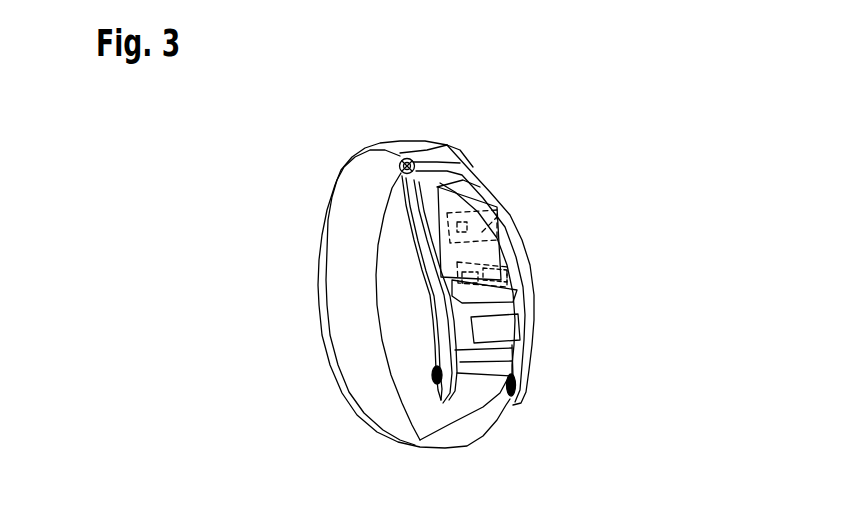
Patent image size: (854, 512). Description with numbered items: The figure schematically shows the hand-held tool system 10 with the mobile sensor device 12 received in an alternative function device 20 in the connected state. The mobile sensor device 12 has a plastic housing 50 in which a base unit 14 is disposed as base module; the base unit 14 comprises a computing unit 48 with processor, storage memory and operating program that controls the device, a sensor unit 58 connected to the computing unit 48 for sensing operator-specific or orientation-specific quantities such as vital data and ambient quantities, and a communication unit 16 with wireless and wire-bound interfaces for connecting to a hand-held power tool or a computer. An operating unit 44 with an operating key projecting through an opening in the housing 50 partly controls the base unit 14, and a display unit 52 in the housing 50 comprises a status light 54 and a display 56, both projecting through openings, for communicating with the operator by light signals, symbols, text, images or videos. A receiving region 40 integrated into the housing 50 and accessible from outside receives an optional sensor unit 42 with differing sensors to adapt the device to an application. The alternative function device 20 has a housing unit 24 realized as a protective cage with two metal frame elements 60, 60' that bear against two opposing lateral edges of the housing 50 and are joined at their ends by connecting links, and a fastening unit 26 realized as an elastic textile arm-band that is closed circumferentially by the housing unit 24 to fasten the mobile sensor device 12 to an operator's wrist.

The hand-held tool system 10 is at (468, 257).
The mobile sensor device 12 is at (509, 287).
The base unit 14 is at (516, 280).
The communication unit 16 is at (526, 323).
The alternative function device 20 is at (290, 297).
The housing unit 24 is at (335, 306).
The fastening unit 26 is at (403, 410).
The receiving region 40 is at (507, 233).
The optional sensor unit 42 is at (373, 226).
The operating unit 44 is at (534, 332).
The computing unit 48 is at (391, 320).
The housing 50 is at (475, 160).
The display unit 52 is at (423, 124).
The status light 54 is at (501, 181).
The display 56 is at (526, 328).
The sensor unit 58 is at (391, 303).
The frame element 60 is at (383, 281).
The frame element 60' is at (525, 382).